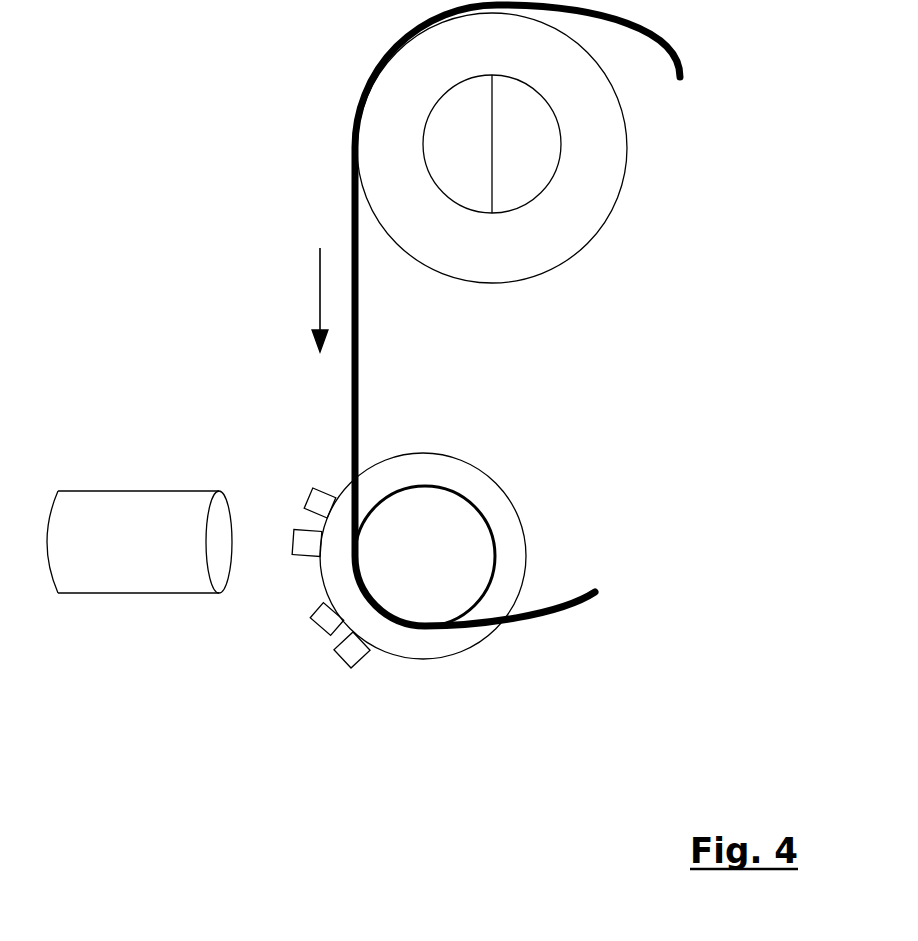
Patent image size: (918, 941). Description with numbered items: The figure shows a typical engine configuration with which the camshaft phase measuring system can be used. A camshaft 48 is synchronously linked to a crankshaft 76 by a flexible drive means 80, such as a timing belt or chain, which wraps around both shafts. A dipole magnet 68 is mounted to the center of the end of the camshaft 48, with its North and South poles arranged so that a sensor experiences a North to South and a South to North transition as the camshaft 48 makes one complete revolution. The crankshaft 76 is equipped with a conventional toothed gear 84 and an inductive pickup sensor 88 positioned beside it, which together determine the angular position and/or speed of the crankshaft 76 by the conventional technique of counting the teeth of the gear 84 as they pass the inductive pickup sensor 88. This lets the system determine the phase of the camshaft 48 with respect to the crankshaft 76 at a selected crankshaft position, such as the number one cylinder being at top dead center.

The camshaft 48 is at (603, 162).
The dipole magnet 68 is at (517, 182).
The flexible drive means 80 is at (357, 403).
The crankshaft 76 is at (477, 480).
The toothed gear 84 is at (352, 653).
The inductive pickup sensor 88 is at (183, 547).